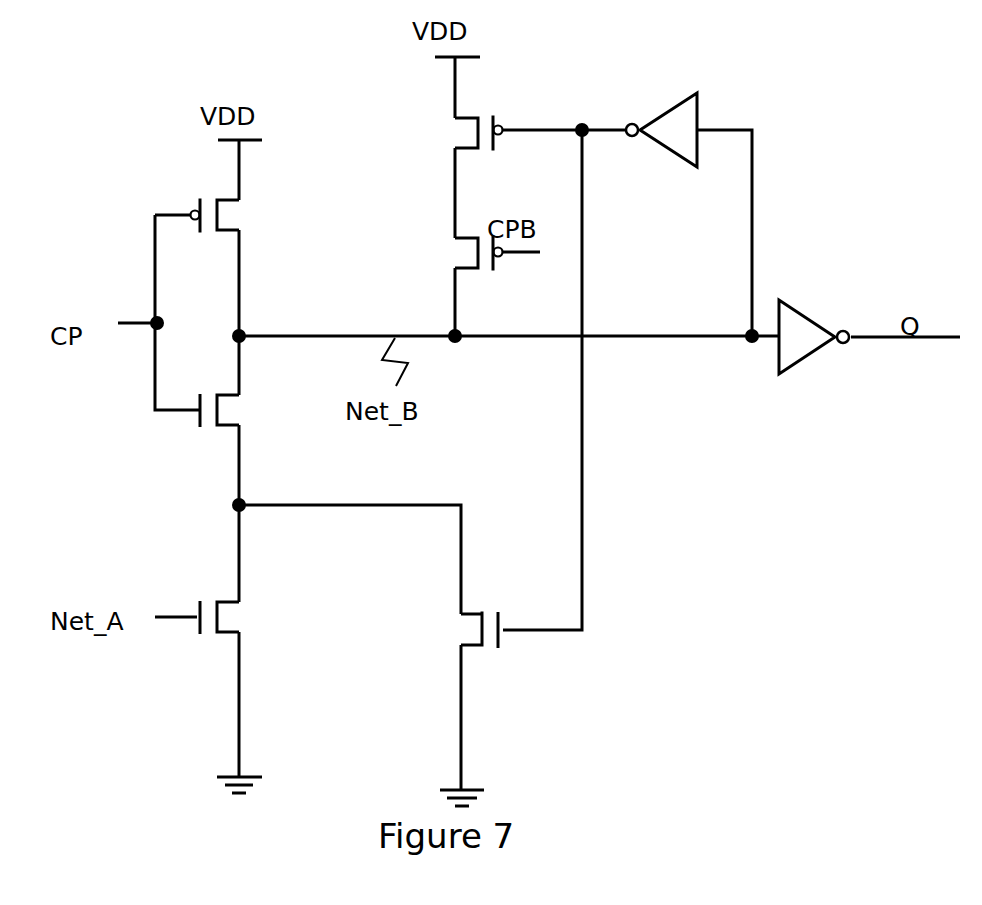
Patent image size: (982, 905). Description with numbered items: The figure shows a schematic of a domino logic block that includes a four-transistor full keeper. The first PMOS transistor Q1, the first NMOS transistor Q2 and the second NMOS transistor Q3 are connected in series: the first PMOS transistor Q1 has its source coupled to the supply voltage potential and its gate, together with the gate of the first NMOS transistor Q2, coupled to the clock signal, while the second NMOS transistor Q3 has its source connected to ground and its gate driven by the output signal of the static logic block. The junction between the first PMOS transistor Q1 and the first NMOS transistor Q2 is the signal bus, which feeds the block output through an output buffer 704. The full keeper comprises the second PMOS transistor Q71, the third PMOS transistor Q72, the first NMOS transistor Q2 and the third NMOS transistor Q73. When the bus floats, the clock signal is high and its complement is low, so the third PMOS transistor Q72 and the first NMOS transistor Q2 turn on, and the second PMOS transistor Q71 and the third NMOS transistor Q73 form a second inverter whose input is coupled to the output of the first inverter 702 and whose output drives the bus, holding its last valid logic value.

The first inverter 702 is at (677, 166).
The output inverter 704 is at (826, 360).
The first PMOS transistor Q1 is at (218, 218).
The first NMOS transistor Q2 is at (240, 413).
The second NMOS transistor Q3 is at (218, 619).
The second PMOS transistor Q71 is at (479, 134).
The third PMOS transistor Q72 is at (458, 256).
The third NMOS transistor Q73 is at (438, 633).